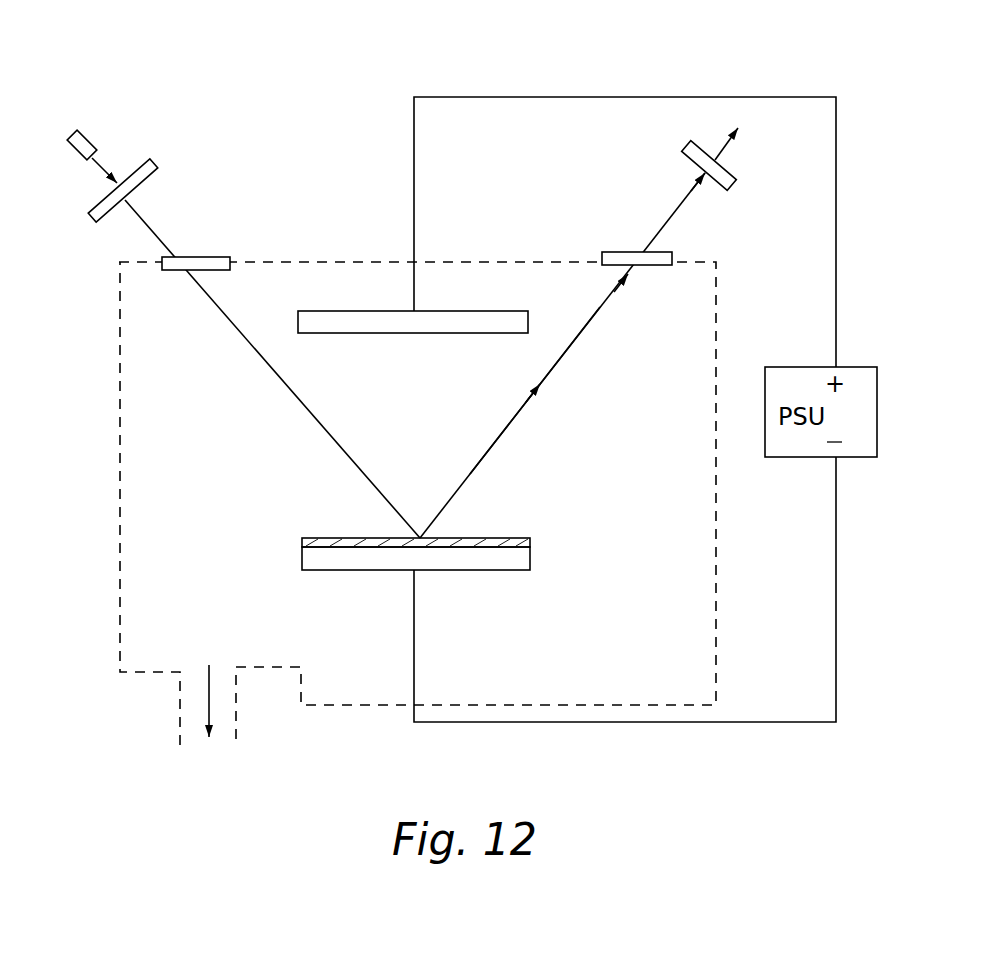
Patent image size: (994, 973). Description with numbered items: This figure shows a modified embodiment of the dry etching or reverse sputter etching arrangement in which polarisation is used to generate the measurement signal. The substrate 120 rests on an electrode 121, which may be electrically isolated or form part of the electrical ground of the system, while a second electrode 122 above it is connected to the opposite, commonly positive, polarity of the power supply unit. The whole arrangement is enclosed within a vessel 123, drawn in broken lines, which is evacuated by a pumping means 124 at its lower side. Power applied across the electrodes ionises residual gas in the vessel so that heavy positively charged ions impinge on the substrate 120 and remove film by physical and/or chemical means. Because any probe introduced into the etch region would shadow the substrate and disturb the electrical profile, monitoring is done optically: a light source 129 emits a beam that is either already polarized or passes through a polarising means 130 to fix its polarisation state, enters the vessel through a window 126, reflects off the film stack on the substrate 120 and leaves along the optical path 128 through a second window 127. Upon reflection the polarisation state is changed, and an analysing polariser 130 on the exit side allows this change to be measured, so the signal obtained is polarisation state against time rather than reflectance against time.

The thin film layer 120 is at (523, 537).
The substrate 121 is at (513, 558).
The electrode 122 is at (465, 318).
The vacuum chamber 123 is at (118, 408).
The pump outlet 124 is at (228, 716).
The entrance window 126 is at (200, 263).
The exit window 127 is at (627, 257).
The reflected light beam 128 is at (570, 347).
The light source 129 is at (78, 138).
The polarising means 130 is at (150, 160).